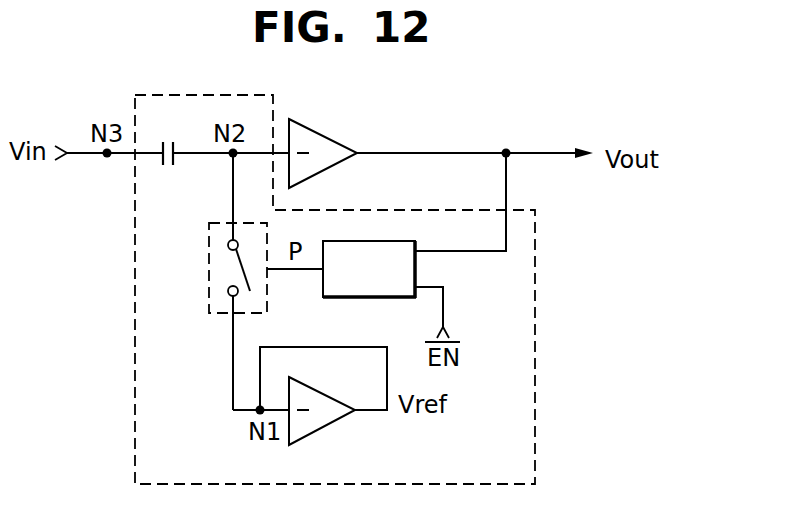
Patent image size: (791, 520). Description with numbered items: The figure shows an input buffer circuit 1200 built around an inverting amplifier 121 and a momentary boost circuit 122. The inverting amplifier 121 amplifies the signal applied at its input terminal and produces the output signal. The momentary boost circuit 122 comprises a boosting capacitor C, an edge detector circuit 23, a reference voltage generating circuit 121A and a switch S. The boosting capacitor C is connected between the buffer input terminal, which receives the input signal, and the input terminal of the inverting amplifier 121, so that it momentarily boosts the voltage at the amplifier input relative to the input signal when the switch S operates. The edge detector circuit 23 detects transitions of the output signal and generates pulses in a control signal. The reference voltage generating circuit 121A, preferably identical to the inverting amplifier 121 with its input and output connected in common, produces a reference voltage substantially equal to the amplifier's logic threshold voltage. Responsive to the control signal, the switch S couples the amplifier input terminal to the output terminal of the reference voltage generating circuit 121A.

The input buffer circuit 1200 is at (606, 92).
The inverting amplifier 121 is at (325, 134).
The reference voltage generating circuit 121A is at (320, 429).
The momentary boost circuit 122 is at (535, 292).
The edge detector circuit 23 is at (370, 298).
The boosting capacitor C is at (168, 139).
The switch S is at (209, 268).